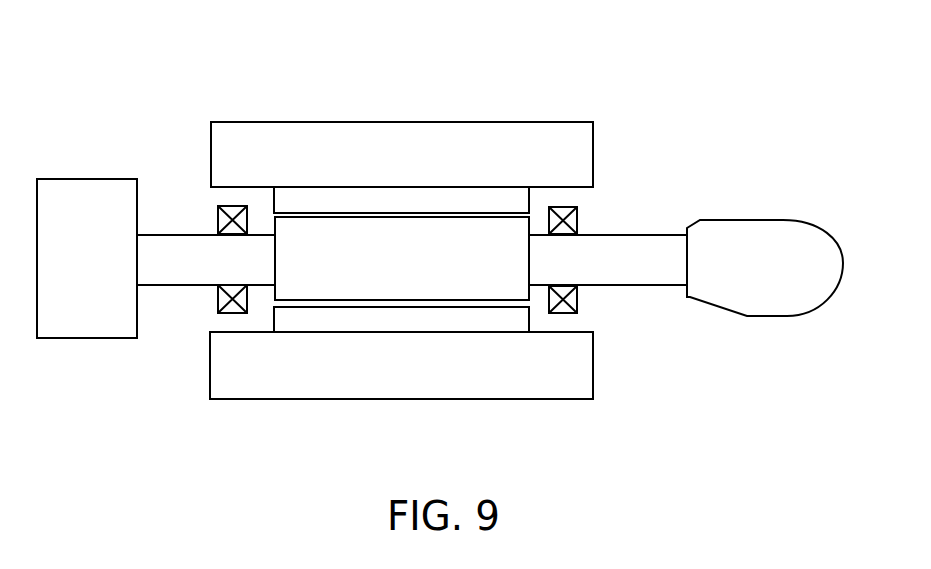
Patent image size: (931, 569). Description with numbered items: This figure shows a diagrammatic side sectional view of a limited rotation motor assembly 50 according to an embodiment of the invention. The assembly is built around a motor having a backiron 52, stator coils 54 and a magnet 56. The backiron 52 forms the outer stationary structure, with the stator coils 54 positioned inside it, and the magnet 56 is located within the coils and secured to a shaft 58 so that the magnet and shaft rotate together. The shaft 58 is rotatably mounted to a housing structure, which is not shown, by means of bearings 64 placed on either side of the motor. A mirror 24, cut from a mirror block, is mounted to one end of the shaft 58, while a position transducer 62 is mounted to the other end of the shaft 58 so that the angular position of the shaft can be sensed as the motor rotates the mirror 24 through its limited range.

The limited rotation motor assembly 50 is at (229, 41).
The backiron 52 is at (484, 135).
The stator coils 54 is at (343, 201).
The magnet 56 is at (281, 286).
The shaft 58 is at (664, 272).
The position transducer 62 is at (84, 195).
The bearings 64 is at (218, 227).
The mirror 24 is at (767, 242).